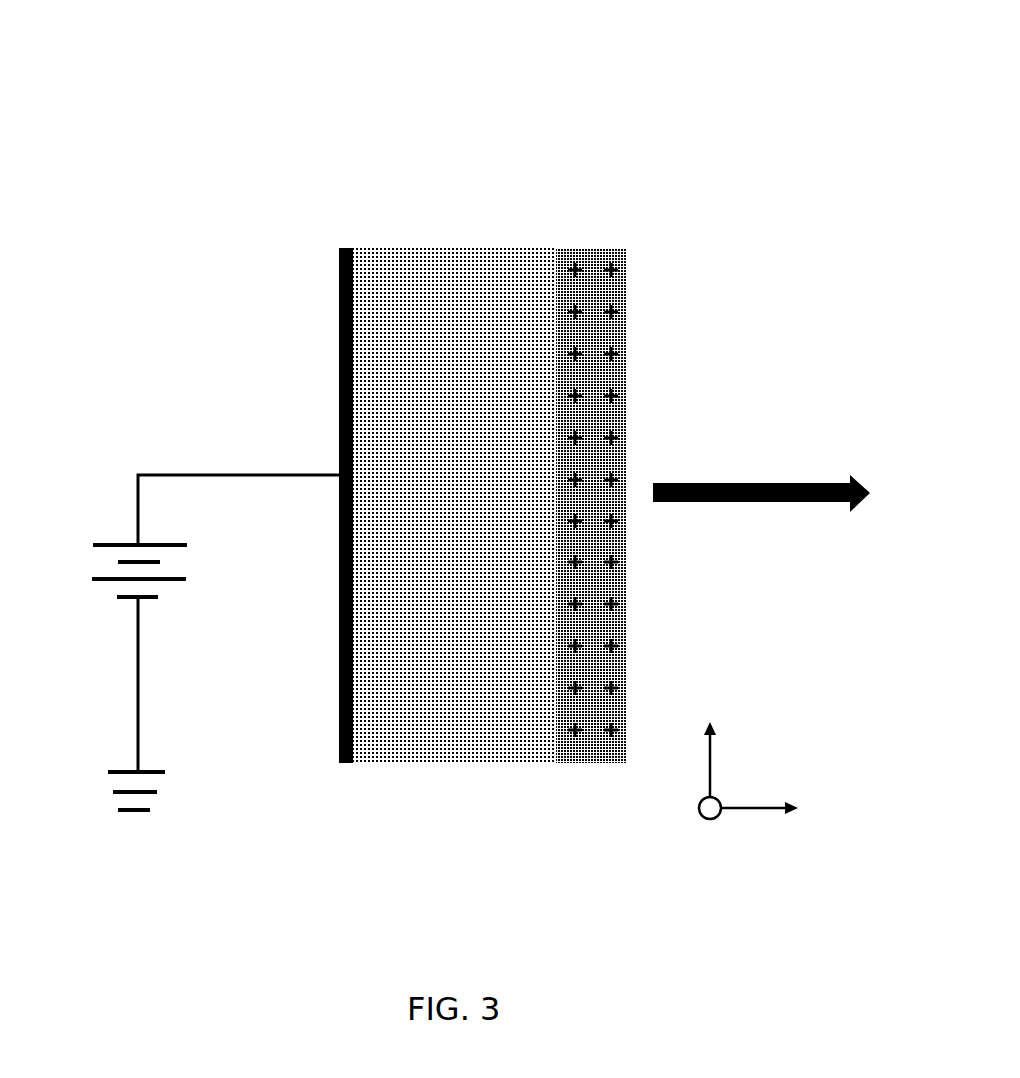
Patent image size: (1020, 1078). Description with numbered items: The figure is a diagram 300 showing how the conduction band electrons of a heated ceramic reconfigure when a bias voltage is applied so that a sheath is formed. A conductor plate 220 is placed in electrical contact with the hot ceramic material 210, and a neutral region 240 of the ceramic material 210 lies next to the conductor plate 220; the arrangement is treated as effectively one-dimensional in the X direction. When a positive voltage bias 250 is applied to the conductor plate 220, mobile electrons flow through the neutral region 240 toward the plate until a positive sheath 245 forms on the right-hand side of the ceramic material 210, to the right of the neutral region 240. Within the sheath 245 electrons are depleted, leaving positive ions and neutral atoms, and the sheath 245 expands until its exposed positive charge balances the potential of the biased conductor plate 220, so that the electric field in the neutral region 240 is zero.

The diagram 300 is at (450, 148).
The ceramic material 210 is at (582, 577).
The conductor plate 220 is at (330, 365).
The neutral region 240 is at (420, 767).
The positive sheath 245 is at (731, 502).
The positive voltage bias 250 is at (100, 516).